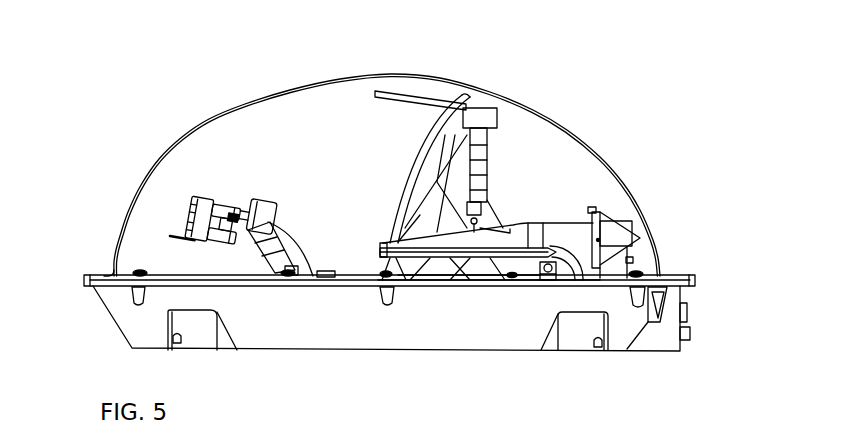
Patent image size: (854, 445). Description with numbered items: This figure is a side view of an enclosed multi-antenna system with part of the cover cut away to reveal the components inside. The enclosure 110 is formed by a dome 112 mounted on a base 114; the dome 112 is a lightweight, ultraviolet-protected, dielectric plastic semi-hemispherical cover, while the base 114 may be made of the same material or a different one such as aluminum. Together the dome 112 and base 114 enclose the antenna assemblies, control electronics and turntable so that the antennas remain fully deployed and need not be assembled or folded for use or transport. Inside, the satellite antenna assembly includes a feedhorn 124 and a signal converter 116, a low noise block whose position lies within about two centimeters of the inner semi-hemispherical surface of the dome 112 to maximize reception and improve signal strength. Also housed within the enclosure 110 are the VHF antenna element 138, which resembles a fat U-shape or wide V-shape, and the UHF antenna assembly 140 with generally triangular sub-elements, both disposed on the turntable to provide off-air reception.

The enclosure 110 is at (522, 103).
The dome 112 is at (200, 128).
The base 114 is at (334, 328).
The signal converter 116 is at (190, 197).
The feedhorn 124 is at (267, 200).
The VHF antenna element 138 is at (550, 227).
The UHF antenna assembly 140 is at (618, 237).